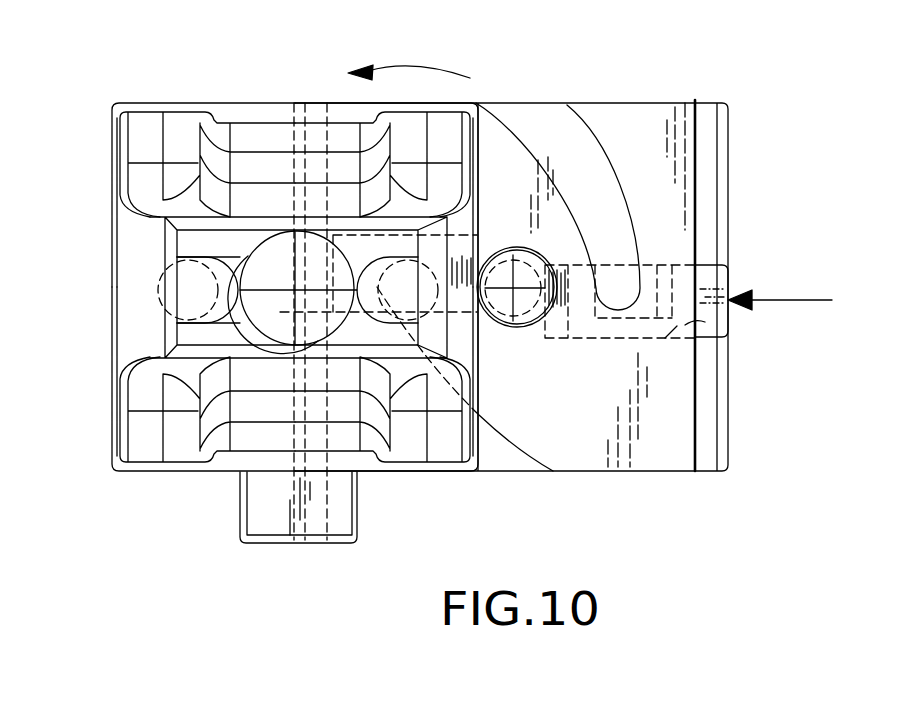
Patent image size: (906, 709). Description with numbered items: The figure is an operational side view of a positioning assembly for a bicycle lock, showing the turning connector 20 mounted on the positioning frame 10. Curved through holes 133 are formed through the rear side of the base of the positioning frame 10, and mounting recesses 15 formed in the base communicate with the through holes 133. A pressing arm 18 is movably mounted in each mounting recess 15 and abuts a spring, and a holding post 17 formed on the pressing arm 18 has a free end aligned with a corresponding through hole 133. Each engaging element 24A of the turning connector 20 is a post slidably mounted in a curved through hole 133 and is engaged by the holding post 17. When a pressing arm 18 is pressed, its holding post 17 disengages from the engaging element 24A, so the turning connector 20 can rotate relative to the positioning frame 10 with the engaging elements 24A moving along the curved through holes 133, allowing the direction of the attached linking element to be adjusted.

The positioning frame 10 is at (686, 80).
The turning connector 20 is at (168, 80).
The through holes 133 is at (585, 130).
The holding post 17 is at (585, 250).
The pressing arm 18 is at (710, 280).
The mounting recesses 15 is at (700, 322).
The engaging element 24A is at (187, 293).